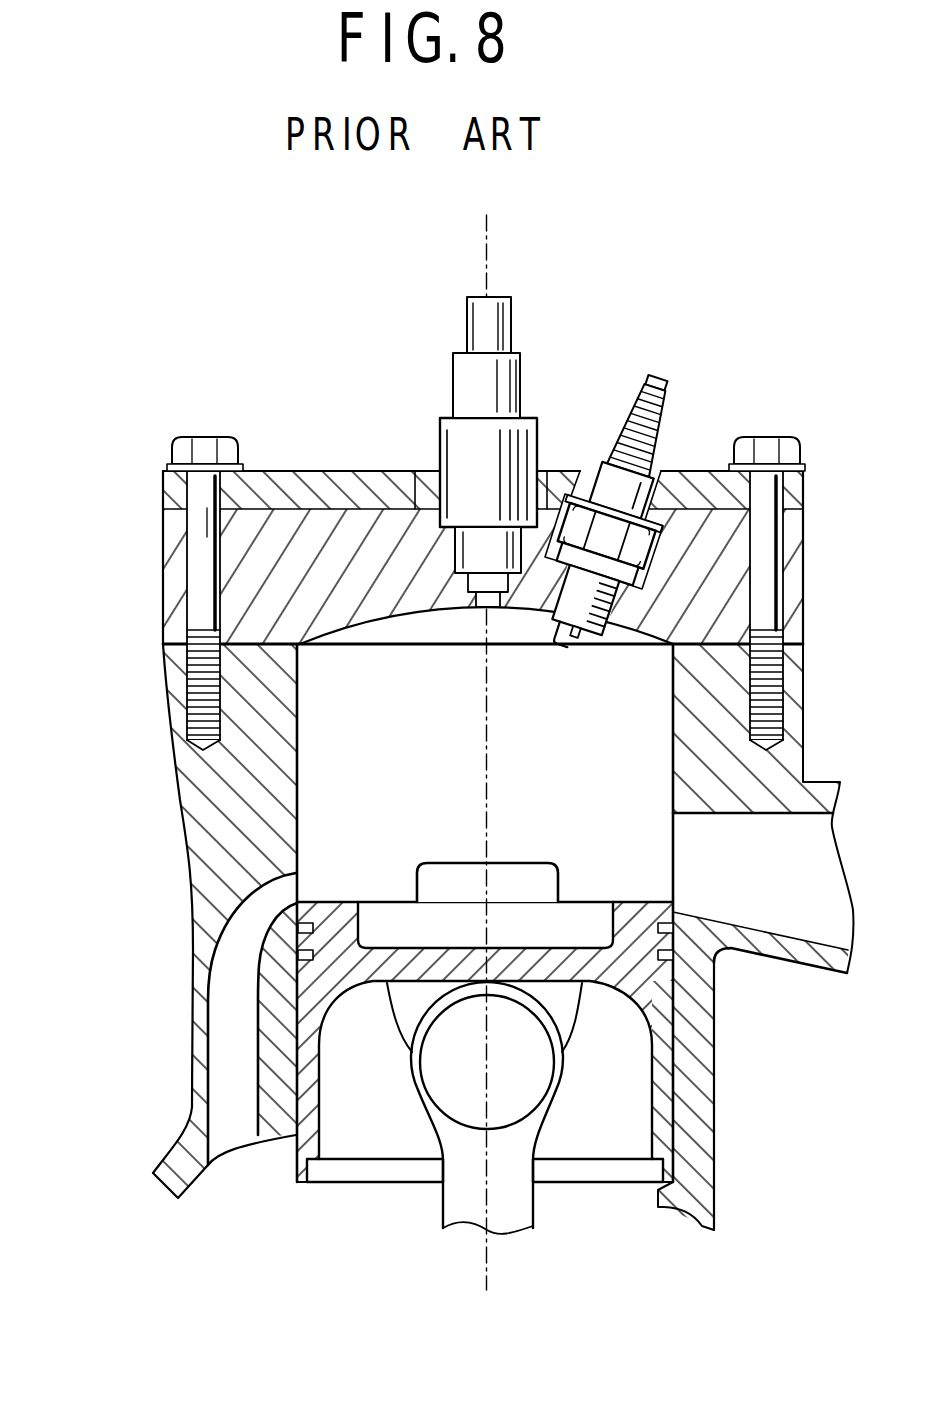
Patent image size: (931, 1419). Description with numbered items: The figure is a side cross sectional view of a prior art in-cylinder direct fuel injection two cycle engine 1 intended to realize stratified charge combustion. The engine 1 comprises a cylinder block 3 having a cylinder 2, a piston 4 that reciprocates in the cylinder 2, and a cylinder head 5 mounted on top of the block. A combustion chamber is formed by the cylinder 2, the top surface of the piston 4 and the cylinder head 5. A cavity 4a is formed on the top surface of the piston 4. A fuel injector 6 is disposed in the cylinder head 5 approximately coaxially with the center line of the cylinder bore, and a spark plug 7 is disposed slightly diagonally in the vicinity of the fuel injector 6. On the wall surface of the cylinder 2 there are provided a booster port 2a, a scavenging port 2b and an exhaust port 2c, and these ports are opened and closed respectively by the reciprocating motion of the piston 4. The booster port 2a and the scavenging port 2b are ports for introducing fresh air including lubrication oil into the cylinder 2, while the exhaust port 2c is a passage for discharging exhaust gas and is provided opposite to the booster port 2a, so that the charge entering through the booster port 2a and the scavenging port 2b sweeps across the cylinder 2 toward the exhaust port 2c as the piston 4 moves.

The engine 1 is at (310, 355).
The cylinder 2 is at (350, 757).
The booster port 2a is at (265, 915).
The scavenging port 2b is at (502, 880).
The exhaust port 2c is at (725, 882).
The cylinder block 3 is at (223, 873).
The piston 4 is at (334, 917).
The cavity 4a is at (575, 912).
The cylinder head 5 is at (245, 563).
The fuel injector 6 is at (520, 392).
The spark plug 7 is at (662, 440).